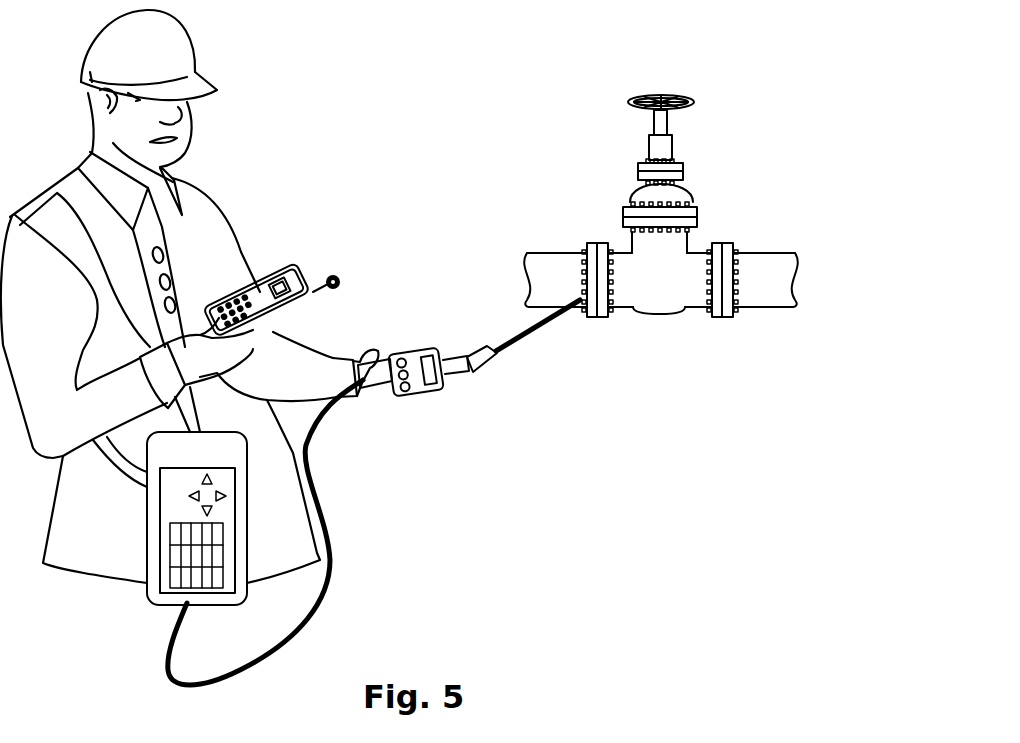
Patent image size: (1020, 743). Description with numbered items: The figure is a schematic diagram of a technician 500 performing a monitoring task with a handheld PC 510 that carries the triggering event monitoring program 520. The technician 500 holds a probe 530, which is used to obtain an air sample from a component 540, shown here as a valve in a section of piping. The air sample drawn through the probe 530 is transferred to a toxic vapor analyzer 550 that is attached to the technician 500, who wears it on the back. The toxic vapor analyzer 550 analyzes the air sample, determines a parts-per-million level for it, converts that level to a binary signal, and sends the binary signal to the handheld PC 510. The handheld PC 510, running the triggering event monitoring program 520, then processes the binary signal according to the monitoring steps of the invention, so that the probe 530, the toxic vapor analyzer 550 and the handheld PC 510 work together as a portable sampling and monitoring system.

The technician 500 is at (190, 43).
The handheld PC 510 is at (287, 258).
The triggering event monitoring program 520 is at (287, 297).
The probe 530 is at (403, 397).
The component 540 is at (655, 317).
The toxic vapor analyzer 550 is at (147, 595).